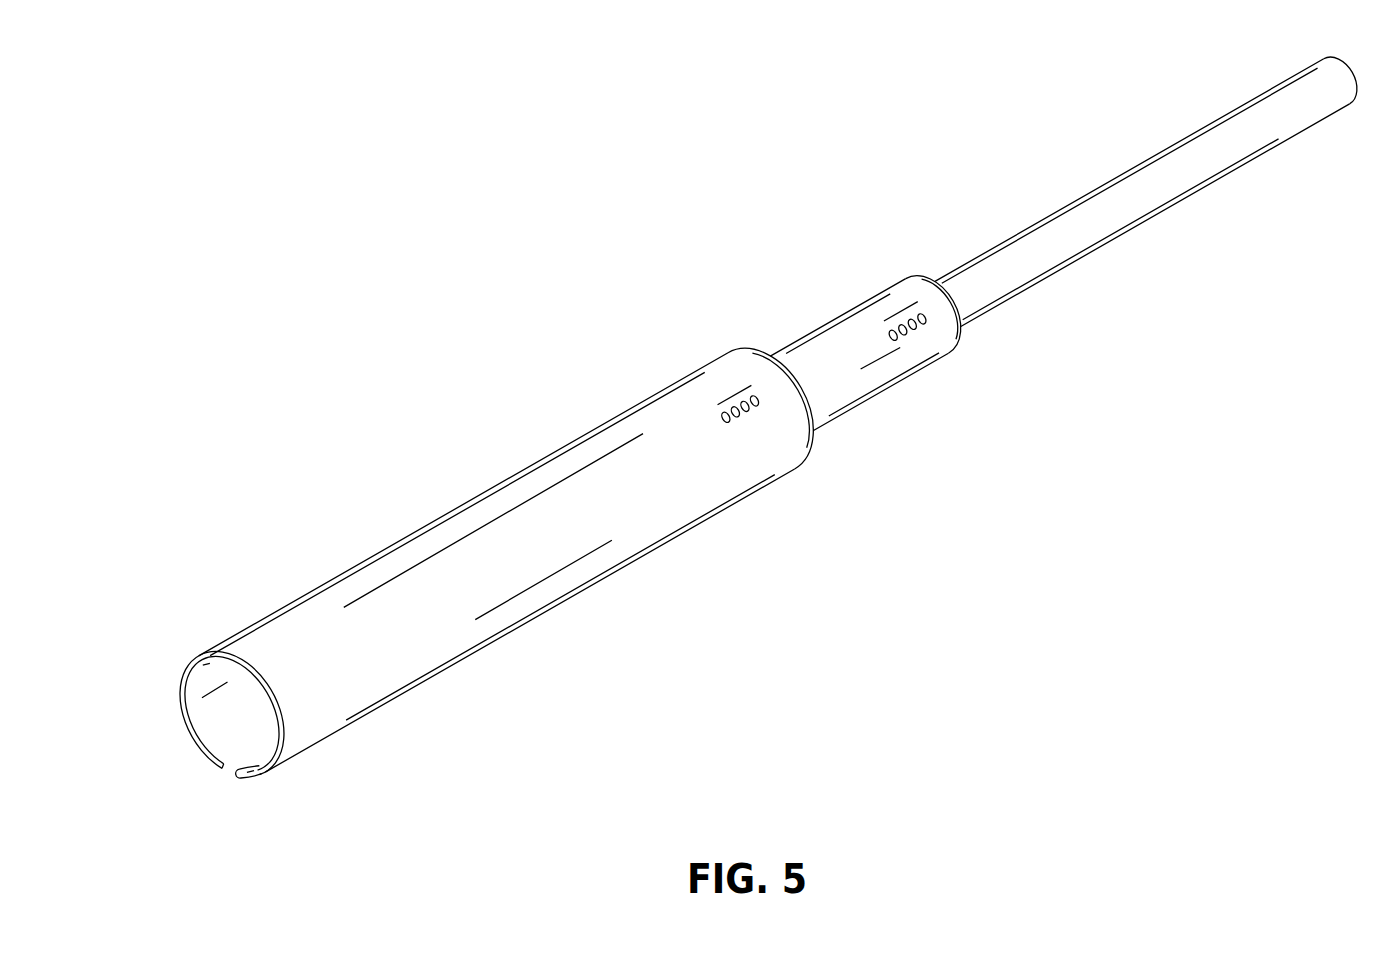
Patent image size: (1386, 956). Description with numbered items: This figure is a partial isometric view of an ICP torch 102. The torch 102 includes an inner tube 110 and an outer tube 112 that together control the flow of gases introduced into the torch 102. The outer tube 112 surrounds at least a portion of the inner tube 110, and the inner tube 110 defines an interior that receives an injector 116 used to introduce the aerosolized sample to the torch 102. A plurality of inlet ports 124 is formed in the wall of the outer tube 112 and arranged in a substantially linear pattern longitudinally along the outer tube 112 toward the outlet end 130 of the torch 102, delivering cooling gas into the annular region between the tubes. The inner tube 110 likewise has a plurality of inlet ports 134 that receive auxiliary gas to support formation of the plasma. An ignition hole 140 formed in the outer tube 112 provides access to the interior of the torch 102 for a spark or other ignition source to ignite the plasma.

The torch 102 is at (738, 437).
The inner tube 110 is at (853, 327).
The outer tube 112 is at (366, 582).
The injector 116 is at (1141, 180).
The inlet ports 124 is at (734, 392).
The outlet end 130 is at (190, 724).
The inlet ports 134 is at (903, 310).
The ignition hole 140 is at (214, 787).